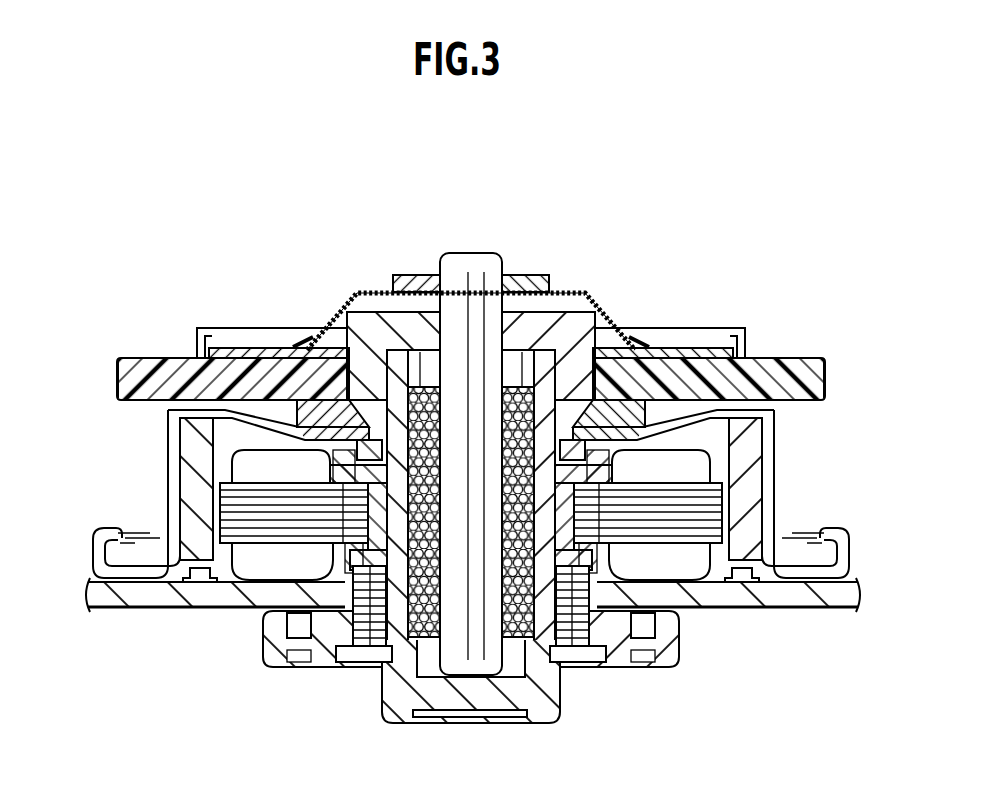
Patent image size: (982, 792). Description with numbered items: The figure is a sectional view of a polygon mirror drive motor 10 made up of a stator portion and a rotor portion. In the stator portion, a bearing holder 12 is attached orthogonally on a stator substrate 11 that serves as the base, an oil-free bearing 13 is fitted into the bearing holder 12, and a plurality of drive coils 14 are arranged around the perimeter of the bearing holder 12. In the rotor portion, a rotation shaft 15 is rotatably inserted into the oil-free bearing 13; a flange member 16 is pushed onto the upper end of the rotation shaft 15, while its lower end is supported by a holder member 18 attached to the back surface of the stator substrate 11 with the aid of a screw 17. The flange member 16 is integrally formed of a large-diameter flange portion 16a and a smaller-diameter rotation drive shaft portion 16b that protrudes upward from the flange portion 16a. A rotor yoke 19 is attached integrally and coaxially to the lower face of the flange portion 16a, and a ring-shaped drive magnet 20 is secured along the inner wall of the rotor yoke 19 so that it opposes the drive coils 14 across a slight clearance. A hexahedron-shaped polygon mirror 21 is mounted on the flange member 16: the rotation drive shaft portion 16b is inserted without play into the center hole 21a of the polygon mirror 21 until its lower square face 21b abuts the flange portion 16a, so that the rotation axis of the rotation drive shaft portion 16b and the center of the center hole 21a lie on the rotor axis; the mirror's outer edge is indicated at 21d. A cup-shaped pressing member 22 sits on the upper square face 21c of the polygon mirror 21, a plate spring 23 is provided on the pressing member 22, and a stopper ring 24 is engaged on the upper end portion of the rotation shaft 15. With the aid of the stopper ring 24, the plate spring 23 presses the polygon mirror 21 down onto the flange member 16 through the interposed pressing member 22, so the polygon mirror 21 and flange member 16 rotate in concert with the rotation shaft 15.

The polygon mirror drive motor 10 is at (445, 453).
The stator substrate 11 is at (838, 598).
The bearing holder 12 is at (664, 626).
The oil-free bearing 13 is at (519, 622).
The drive coils 14 is at (733, 583).
The rotation shaft 15 is at (452, 252).
The flange member 16 is at (471, 322).
The flange portion 16a is at (622, 403).
The rotation drive shaft portion 16b is at (760, 237).
The screw 17 is at (357, 662).
The holder member 18 is at (443, 703).
The rotor yoke 19 is at (767, 433).
The drive magnet 20 is at (738, 493).
The polygon mirror 21 is at (418, 396).
The center hole 21a is at (333, 313).
The lower square face 21b is at (212, 420).
The upper square face 21c is at (172, 357).
The turntable outer edge 21d is at (117, 378).
The pressing member 22 is at (223, 350).
The plate spring 23 is at (373, 291).
The stopper ring 24 is at (410, 275).